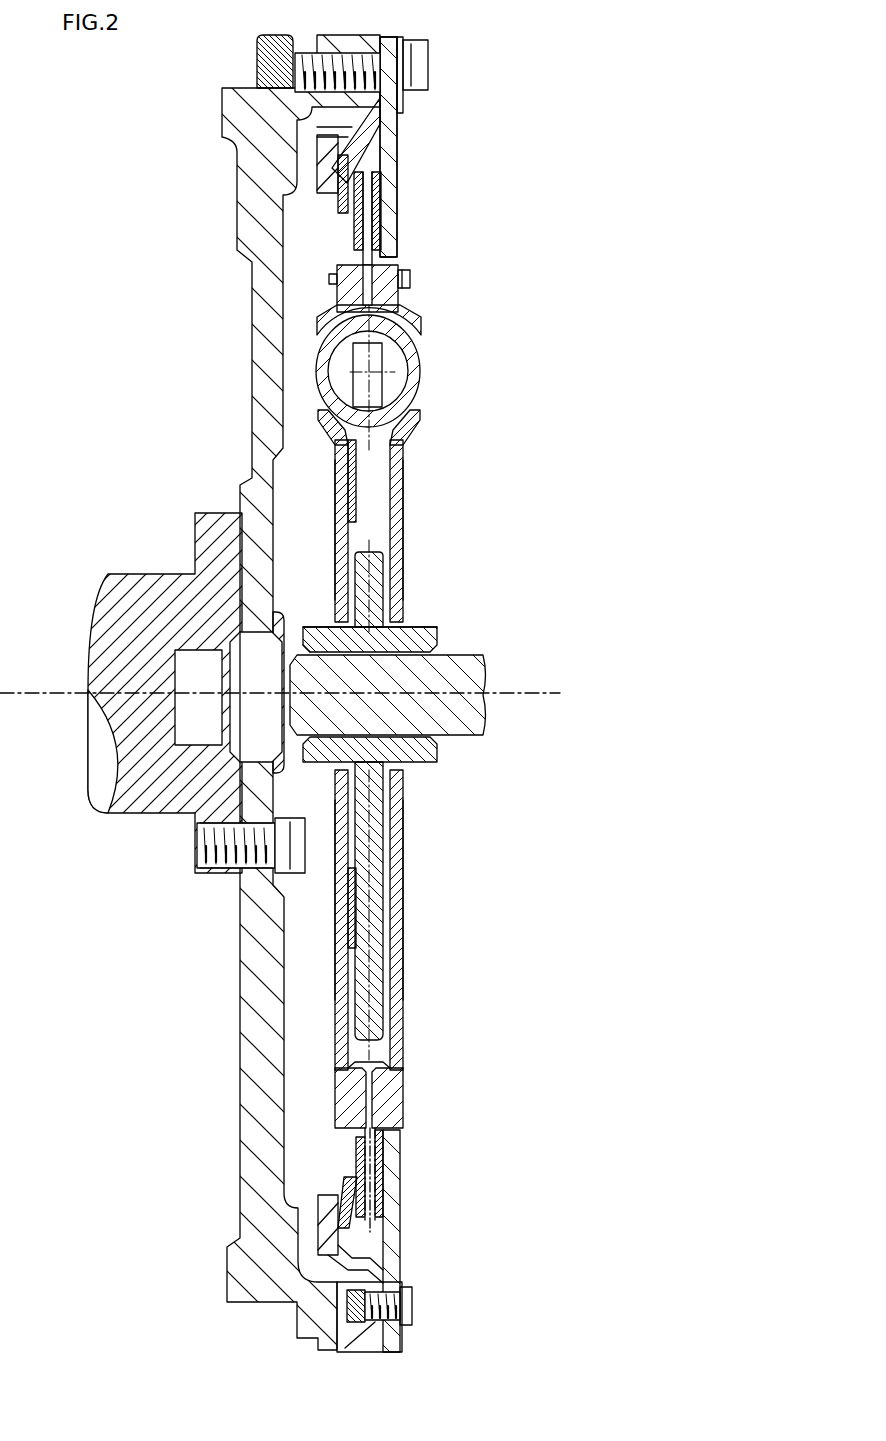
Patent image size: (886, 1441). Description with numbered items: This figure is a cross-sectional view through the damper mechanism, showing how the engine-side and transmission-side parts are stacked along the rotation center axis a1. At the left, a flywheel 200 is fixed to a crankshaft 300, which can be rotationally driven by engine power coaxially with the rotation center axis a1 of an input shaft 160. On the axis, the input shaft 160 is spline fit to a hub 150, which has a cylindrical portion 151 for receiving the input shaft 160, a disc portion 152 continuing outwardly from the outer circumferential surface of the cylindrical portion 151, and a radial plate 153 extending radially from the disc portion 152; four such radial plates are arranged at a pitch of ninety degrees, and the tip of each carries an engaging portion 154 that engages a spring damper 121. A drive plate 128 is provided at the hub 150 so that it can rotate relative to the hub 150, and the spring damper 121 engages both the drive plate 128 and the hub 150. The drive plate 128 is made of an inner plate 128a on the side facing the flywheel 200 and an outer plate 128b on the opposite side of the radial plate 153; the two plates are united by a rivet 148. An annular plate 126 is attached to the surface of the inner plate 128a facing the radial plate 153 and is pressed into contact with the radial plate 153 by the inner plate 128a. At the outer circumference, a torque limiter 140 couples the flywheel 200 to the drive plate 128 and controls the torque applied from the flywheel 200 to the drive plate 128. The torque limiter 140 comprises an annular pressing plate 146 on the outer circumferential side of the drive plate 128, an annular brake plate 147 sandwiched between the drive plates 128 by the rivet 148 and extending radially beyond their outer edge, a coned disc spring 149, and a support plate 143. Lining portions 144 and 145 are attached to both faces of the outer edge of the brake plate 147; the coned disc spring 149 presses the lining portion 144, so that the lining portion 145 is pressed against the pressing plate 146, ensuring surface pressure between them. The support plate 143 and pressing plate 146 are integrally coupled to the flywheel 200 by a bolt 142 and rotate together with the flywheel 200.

The flywheel 200 is at (262, 181).
The crankshaft 300 is at (120, 652).
The input shaft 160 is at (470, 680).
The hub 150 is at (430, 641).
The cylindrical portion 151 is at (413, 630).
The disc portion 152 is at (373, 575).
The radial plate 153 is at (373, 1017).
The drive plate 128 is at (402, 456).
The inner plate 128a is at (337, 461).
The outer plate 128b is at (402, 527).
The annular plate 126 is at (357, 484).
The spring damper 121 is at (412, 368).
The engaging portion 154 is at (405, 402).
The brake plate 147 is at (370, 306).
The rivet 148 is at (410, 280).
The lining portion 145 is at (385, 211).
The lining portion 144 is at (383, 238).
The pressing plate 146 is at (393, 183).
The coned disc spring 149 is at (345, 164).
The support plate 143 is at (335, 150).
The torque limiter 140 is at (426, 124).
The bolt 142 is at (425, 76).
The rotation center axis a1 is at (522, 706).